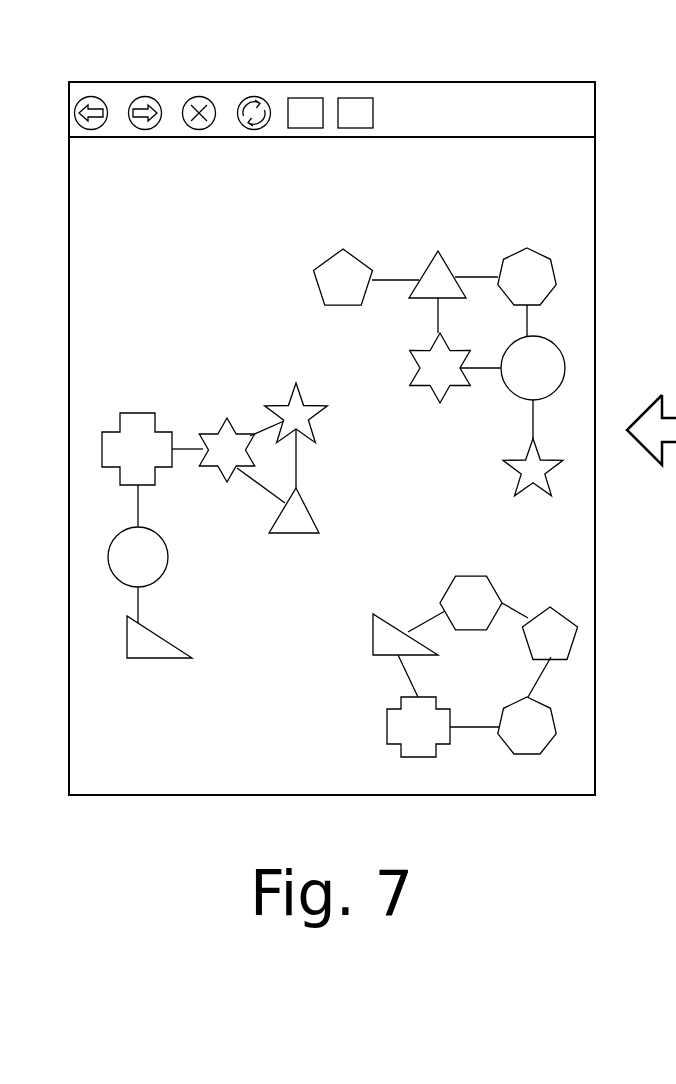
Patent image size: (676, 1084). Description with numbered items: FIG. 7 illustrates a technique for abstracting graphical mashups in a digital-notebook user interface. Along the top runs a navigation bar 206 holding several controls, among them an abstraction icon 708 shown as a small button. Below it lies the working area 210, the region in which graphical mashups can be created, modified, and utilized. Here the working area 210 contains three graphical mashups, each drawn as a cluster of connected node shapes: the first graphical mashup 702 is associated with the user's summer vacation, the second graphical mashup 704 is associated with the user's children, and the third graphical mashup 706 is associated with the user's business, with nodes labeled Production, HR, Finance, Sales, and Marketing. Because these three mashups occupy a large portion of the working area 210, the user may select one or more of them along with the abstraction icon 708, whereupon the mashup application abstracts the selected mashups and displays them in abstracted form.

The navigation bar 206 is at (572, 82).
The abstraction icon 708 is at (366, 98).
The working area 210 is at (404, 171).
The first graphical mashup 702 is at (447, 262).
The second graphical mashup 704 is at (138, 413).
The third graphical mashup 706 is at (488, 576).